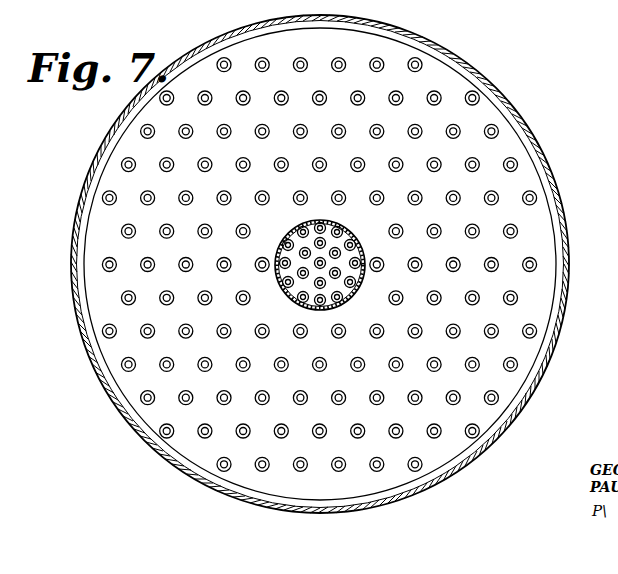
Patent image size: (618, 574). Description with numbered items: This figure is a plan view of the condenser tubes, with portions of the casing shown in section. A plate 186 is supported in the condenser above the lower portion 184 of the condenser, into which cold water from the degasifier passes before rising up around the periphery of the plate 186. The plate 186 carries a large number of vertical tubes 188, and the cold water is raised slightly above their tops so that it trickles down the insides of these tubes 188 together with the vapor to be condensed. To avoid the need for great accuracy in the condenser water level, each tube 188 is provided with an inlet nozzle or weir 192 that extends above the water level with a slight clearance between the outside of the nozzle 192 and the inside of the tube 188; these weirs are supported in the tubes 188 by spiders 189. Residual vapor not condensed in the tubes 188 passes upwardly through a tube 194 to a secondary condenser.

The lower portion of the condenser 184 is at (468, 64).
The plate 186 is at (450, 457).
The vertical tubes 188 is at (518, 363).
The spiders 189 is at (338, 472).
The inlet nozzle or weir 192 is at (145, 398).
The tube 194 is at (349, 296).